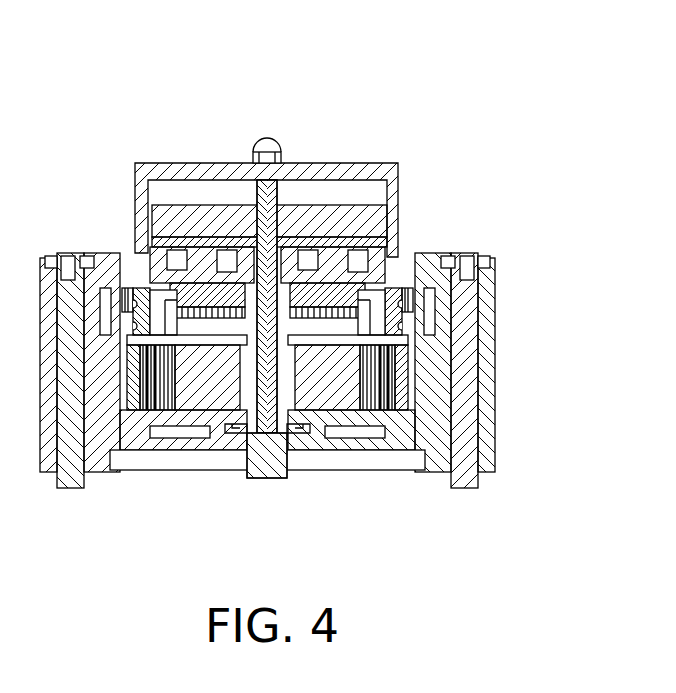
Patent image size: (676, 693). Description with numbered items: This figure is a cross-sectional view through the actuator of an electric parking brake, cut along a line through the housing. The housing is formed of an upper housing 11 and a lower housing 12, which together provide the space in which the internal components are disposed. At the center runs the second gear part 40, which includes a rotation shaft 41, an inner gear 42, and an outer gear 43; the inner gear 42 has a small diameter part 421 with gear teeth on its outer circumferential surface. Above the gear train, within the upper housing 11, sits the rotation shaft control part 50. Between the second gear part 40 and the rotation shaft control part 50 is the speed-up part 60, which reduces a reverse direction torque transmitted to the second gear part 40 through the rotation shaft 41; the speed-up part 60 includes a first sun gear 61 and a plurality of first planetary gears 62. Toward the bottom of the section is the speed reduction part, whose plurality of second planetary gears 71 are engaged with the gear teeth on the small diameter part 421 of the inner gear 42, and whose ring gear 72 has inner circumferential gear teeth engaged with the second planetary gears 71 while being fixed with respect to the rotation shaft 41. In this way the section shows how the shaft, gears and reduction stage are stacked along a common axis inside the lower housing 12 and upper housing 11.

The upper housing 11 is at (310, 172).
The lower housing 12 is at (490, 352).
The second gear part 40 is at (250, 302).
The rotation shaft 41 is at (262, 215).
The inner gear 42 is at (162, 290).
The small diameter part 421 is at (292, 428).
The outer gear 43 is at (128, 298).
The rotation shaft control part 50 is at (350, 212).
The speed-up part 60 is at (336, 243).
The first sun gear 61 is at (350, 238).
The first planetary gears 62 is at (355, 275).
The second planetary gears 71 is at (220, 447).
The ring gear 72 is at (272, 468).